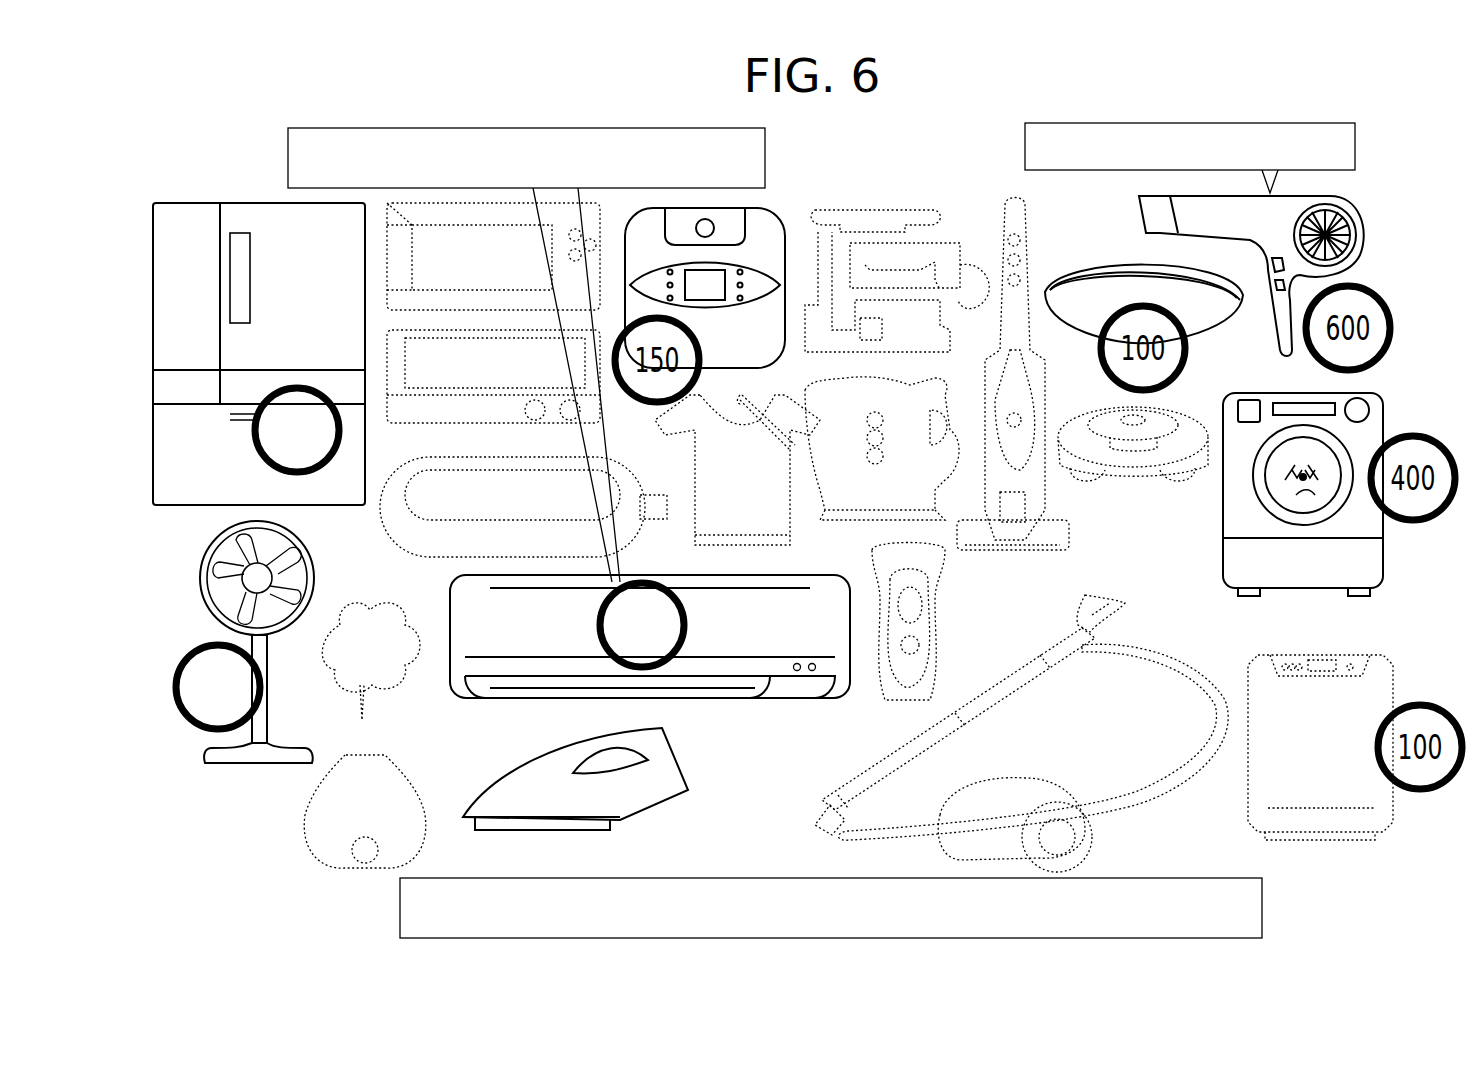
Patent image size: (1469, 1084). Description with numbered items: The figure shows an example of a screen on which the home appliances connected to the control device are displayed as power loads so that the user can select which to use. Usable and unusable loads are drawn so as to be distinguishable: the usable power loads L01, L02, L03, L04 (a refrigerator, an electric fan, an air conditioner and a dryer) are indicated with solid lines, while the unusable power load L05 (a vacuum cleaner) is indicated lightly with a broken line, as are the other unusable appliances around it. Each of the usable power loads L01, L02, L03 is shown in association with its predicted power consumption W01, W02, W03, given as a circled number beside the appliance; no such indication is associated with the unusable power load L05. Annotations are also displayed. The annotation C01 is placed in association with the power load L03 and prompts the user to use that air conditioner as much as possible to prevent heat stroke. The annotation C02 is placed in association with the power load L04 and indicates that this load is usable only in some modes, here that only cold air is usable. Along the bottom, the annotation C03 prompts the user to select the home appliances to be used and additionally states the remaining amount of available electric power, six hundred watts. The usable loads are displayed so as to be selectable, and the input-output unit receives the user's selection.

The power load L01 is at (185, 276).
The power load L02 is at (205, 548).
The power load L03 is at (713, 700).
The power load L04 is at (1350, 210).
The power load L05 is at (1140, 645).
The predicted power consumption W01 is at (254, 440).
The predicted power consumption W02 is at (190, 648).
The predicted power consumption W03 is at (690, 610).
The annotation C01 is at (765, 150).
The annotation C02 is at (1355, 135).
The annotation C03 is at (1262, 905).